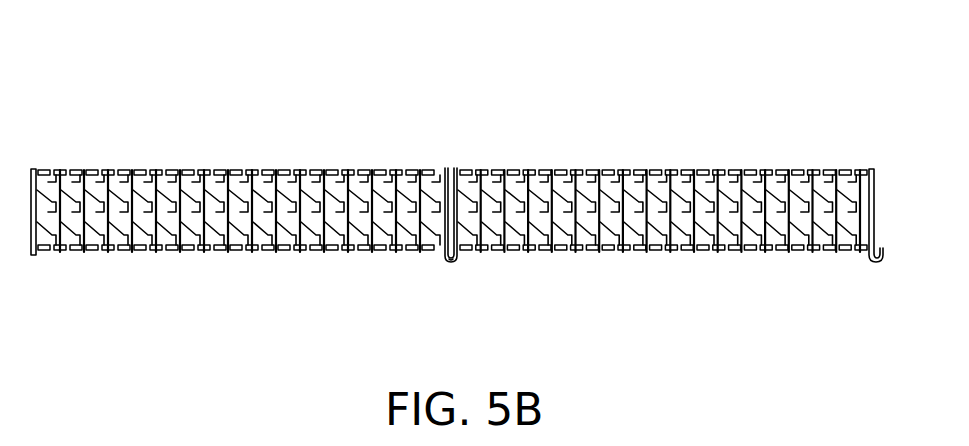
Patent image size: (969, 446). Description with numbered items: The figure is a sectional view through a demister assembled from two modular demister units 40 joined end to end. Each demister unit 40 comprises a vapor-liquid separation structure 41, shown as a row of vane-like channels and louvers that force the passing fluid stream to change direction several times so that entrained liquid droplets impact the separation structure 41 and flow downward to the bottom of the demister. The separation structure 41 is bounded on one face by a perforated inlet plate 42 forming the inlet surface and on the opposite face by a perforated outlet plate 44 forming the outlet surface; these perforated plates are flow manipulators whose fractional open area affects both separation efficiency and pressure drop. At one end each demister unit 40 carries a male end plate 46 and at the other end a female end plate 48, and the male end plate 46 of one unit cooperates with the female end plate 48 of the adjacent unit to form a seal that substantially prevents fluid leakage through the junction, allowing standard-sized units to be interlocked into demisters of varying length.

The demister unit 40 is at (463, 183).
The vapor-liquid separation structure 41 is at (192, 182).
The perforated inlet plate 42 is at (265, 251).
The perforated outlet plate 44 is at (303, 171).
The male end plate 46 is at (464, 200).
The female end plate 48 is at (452, 263).